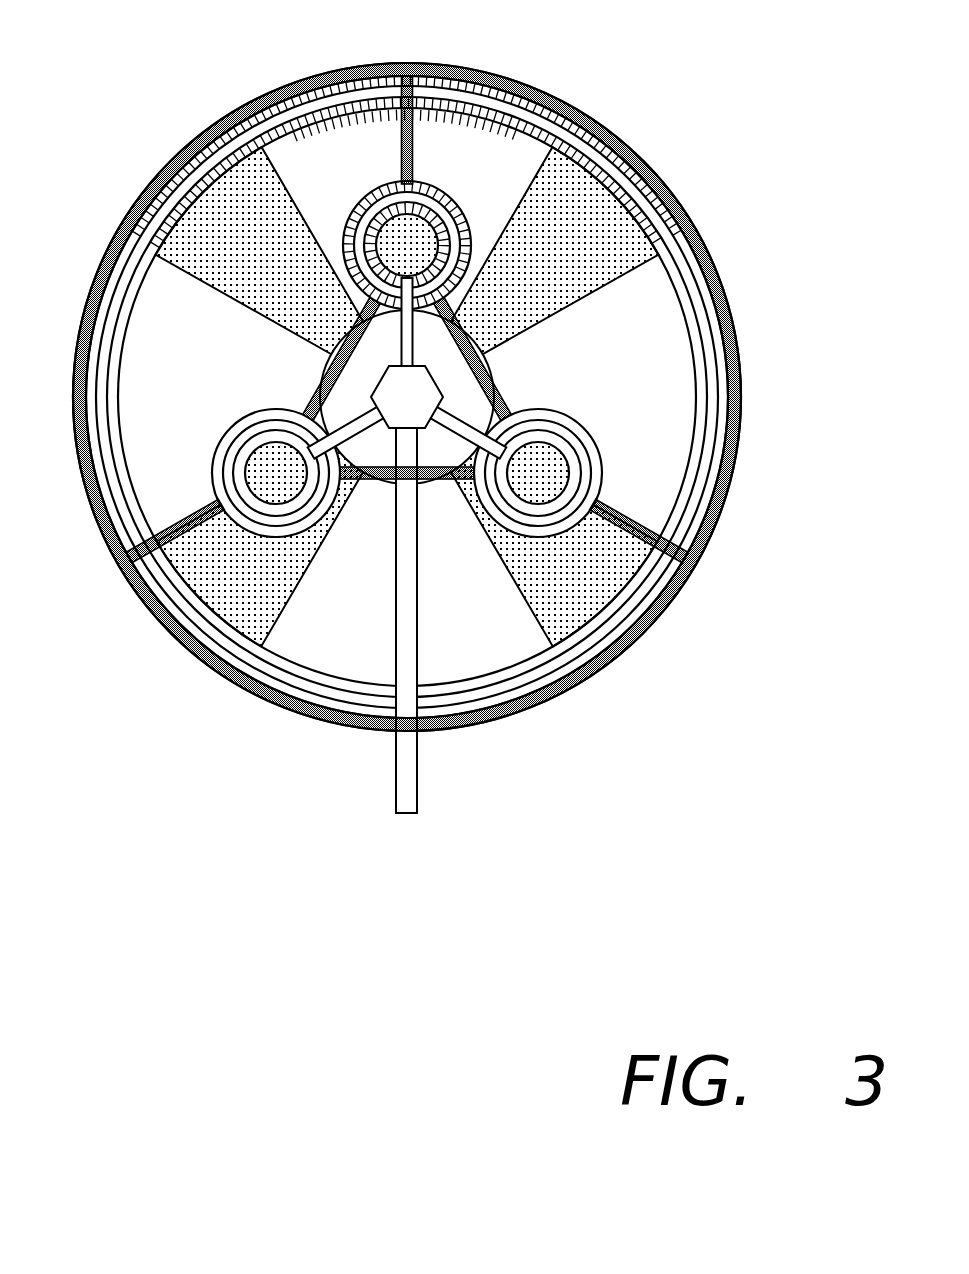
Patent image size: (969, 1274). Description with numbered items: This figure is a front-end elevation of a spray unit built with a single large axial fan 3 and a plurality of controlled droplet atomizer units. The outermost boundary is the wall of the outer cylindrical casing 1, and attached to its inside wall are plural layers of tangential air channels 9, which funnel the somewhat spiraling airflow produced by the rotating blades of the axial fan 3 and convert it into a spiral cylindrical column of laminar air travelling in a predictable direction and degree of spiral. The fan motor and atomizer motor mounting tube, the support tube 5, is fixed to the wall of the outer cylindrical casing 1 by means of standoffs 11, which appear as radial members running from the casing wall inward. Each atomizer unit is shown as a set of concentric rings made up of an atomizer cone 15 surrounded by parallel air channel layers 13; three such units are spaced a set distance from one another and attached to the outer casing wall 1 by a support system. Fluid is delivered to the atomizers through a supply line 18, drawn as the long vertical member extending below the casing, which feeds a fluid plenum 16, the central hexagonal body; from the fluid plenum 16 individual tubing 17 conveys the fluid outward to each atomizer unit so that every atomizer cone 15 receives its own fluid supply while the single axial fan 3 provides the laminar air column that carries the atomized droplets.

The outer cylindrical casing 1 is at (178, 160).
The axial fan 3 is at (577, 223).
The support tube 5 is at (453, 375).
The air channels 9 is at (273, 108).
The standoffs 11 is at (400, 142).
The parallel air channel layers 13 is at (433, 203).
The atomizer cones 15 is at (413, 247).
The fluid plenum 16 is at (377, 380).
The individual tubing 17 is at (318, 404).
The supply line 18 is at (420, 784).